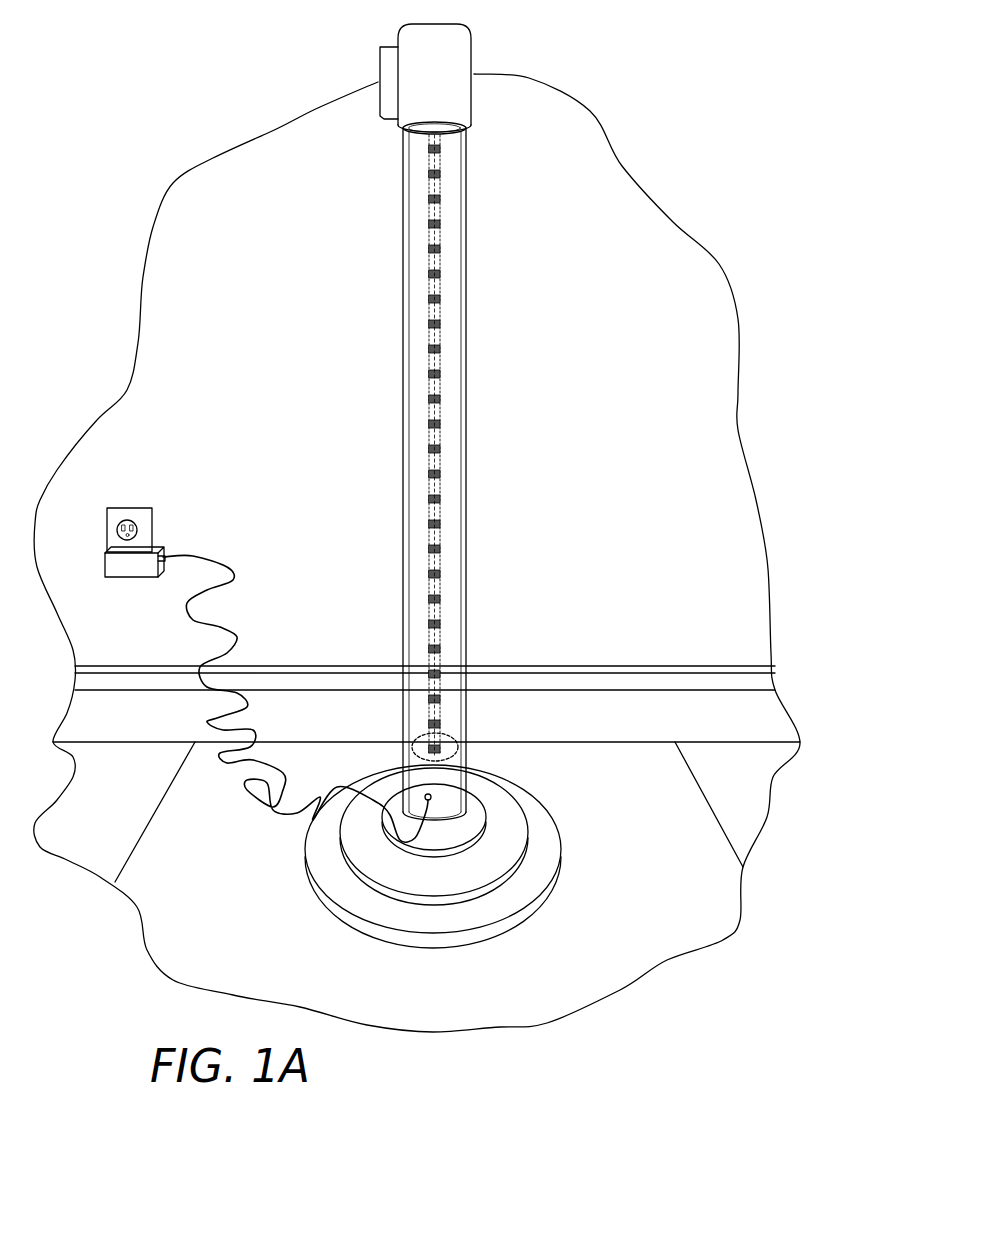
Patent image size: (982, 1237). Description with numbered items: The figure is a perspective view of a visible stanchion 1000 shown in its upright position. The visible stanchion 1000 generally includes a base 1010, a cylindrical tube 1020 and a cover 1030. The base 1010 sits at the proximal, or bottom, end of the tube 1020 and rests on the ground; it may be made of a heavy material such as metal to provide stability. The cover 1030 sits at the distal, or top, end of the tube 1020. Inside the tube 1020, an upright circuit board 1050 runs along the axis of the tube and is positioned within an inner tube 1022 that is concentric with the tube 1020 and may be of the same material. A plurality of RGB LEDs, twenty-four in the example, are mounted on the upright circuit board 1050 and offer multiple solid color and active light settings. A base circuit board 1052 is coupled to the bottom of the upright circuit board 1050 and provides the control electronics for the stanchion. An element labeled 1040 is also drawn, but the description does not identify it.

The visible stanchion 1000 is at (196, 72).
The base 1010 is at (512, 803).
The cylindrical tube 1020 is at (468, 504).
The inner tube 1022 is at (432, 556).
The cover 1030 is at (463, 52).
The power adapter 1040 is at (130, 578).
The upright circuit board 1050 is at (441, 240).
The base circuit board 1052 is at (412, 757).